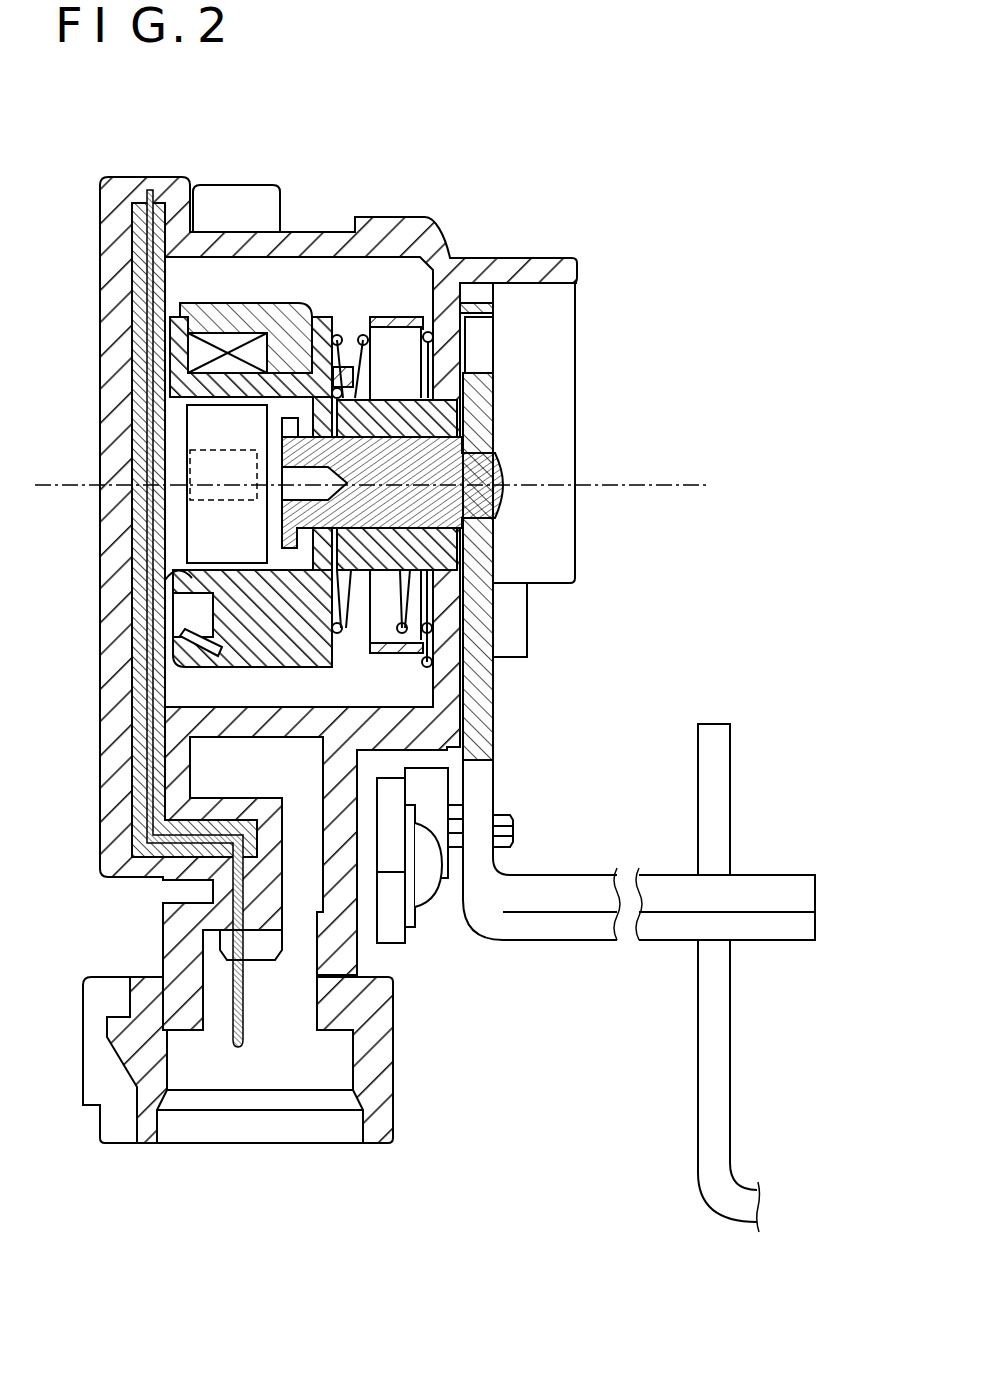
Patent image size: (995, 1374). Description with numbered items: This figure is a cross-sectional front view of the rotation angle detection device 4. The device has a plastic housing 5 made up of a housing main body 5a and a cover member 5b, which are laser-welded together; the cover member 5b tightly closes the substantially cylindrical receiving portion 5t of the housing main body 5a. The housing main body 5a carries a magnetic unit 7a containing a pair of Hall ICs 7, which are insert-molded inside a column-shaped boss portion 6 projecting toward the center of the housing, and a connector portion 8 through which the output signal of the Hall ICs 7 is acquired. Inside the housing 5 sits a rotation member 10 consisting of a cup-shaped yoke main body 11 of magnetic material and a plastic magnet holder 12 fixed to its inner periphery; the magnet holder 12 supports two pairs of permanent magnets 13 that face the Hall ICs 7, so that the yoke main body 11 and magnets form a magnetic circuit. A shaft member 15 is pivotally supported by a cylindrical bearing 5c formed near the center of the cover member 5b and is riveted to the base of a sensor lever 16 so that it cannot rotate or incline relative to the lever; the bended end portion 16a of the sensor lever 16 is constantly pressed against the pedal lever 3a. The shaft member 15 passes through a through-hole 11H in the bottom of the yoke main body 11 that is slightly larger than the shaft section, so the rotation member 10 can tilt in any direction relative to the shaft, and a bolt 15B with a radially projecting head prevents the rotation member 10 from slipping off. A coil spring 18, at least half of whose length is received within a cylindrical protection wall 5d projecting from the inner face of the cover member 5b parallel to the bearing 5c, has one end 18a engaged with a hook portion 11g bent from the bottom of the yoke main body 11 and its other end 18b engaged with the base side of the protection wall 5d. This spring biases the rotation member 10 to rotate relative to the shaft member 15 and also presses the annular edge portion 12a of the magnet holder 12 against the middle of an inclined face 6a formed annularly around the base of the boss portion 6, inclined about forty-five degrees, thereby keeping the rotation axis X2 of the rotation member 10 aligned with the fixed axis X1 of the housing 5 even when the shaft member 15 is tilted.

The rotation angle detection device 4 is at (68, 222).
The housing 5 is at (100, 300).
The housing main body 5a is at (110, 733).
The cover member 5b is at (501, 258).
The bearing 5c is at (388, 394).
The protection wall 5d is at (380, 661).
The receiving portion 5t is at (244, 226).
The boss portion 6 is at (143, 520).
The inclined face 6a is at (140, 603).
The Hall ICs 7 is at (130, 488).
The magnetic unit 7a is at (187, 428).
The connector portion 8 is at (287, 1057).
The rotation member 10 is at (300, 290).
The yoke main body 11 is at (250, 657).
The hook portion 11g is at (350, 378).
The through-hole 11H is at (283, 507).
The magnet holder 12 is at (228, 640).
The annular edge portion 12a is at (170, 575).
The permanent magnets 13 is at (212, 333).
The shaft member 15 is at (493, 417).
The bolt 15B is at (282, 427).
The sensor lever 16 is at (493, 697).
The bended end portion 16a is at (664, 934).
The coil spring 18 is at (333, 643).
The one end of the coil spring 18a is at (322, 385).
The other end of the coil spring 18b is at (413, 662).
The pedal lever 3a is at (724, 788).
The fixed axis X1 is at (62, 480).
The rotation axis X2 is at (600, 470).